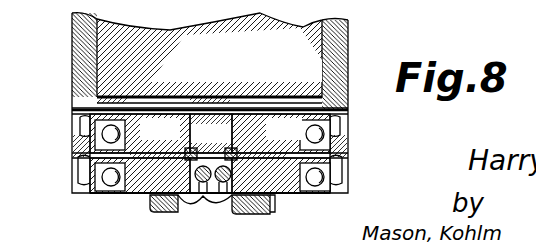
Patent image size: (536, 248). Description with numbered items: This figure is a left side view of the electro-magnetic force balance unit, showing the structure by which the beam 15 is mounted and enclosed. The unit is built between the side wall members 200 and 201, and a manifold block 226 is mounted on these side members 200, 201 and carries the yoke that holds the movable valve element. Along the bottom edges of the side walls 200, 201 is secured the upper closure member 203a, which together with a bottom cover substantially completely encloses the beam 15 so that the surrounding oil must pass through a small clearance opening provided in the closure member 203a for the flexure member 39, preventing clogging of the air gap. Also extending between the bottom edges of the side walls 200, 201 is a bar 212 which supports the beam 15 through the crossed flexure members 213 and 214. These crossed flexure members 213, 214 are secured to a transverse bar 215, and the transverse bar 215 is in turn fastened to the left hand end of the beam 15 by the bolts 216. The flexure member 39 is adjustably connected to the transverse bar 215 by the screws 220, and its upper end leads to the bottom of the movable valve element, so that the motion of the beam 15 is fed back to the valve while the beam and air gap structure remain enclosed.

The side wall member 200 is at (350, 45).
The side wall member 201 is at (74, 33).
The manifold block 226 is at (112, 60).
The upper closure member 203a is at (160, 97).
The bar 212 is at (270, 110).
The flexure member 214 is at (74, 133).
The flexure member 213 is at (143, 153).
The flexure member 39 is at (226, 132).
The transverse bar 215 is at (142, 195).
The screws 220 is at (215, 203).
The bolts 216 is at (174, 212).
The beam 15 is at (276, 207).